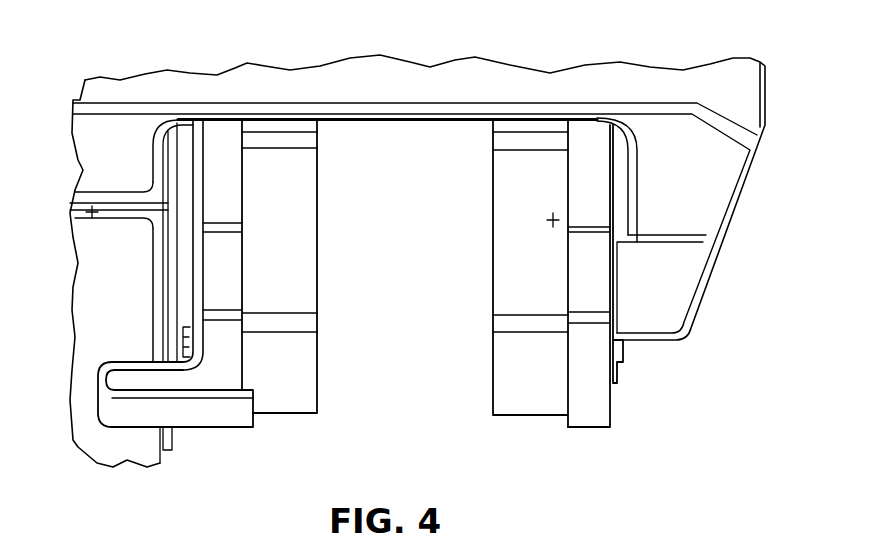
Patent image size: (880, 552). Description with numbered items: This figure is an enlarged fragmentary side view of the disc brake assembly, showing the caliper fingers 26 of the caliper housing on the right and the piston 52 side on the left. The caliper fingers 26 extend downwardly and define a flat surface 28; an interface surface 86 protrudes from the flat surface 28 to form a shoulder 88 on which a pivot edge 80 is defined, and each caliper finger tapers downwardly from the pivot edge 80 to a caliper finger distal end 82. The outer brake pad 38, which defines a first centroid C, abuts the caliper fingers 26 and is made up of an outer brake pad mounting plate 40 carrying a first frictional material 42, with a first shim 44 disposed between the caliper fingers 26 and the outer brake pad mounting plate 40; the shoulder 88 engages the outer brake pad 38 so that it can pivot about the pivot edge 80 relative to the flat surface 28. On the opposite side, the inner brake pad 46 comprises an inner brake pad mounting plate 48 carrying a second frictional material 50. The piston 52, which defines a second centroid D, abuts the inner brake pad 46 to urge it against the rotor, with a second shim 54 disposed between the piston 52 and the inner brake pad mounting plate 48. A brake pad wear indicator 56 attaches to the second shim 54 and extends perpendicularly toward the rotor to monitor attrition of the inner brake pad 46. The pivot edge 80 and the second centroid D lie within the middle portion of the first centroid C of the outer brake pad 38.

The caliper fingers 26 is at (750, 143).
The flat surface 28 is at (627, 162).
The outer brake pad 38 is at (577, 427).
The outer brake pad mounting plate 40 is at (595, 423).
The first frictional material 42 is at (498, 400).
The first shim 44 is at (618, 380).
The inner brake pad 46 is at (179, 119).
The inner brake pad mounting plate 48 is at (220, 130).
The second frictional material 50 is at (300, 223).
The piston 52 is at (175, 208).
The second shim 54 is at (193, 125).
The brake pad wear indicator 56 is at (207, 418).
The pivot edge 80 is at (624, 222).
The caliper finger distal end 82 is at (657, 340).
The interface surface 86 is at (620, 288).
The shoulder 88 is at (620, 237).
The first centroid C is at (550, 227).
The second centroid D is at (92, 212).